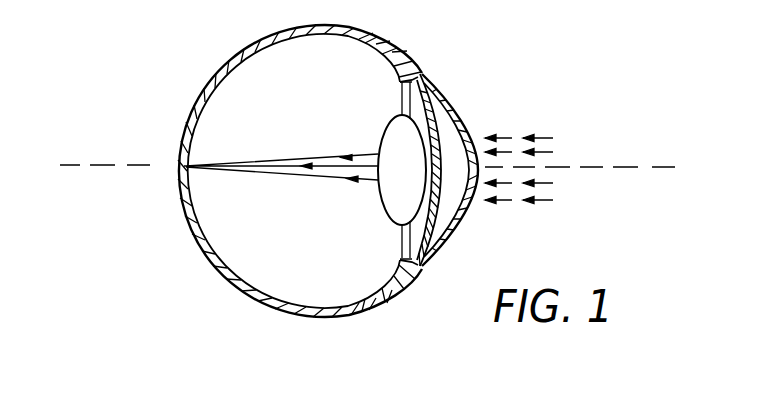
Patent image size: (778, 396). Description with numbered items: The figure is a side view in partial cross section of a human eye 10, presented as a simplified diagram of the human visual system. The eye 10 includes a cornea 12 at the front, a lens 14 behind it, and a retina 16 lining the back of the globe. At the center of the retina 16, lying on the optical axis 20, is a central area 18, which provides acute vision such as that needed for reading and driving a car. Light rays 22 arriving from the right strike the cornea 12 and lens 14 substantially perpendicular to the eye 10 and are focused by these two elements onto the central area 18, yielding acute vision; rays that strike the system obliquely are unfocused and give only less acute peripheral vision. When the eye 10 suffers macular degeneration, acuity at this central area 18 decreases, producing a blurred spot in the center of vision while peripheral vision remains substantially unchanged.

The eye 10 is at (436, 66).
The cornea 12 is at (468, 114).
The lens 14 is at (408, 194).
The retina 16 is at (217, 86).
The central area 18 is at (193, 172).
The optical axis 20 is at (652, 172).
The light rays 22 is at (548, 203).